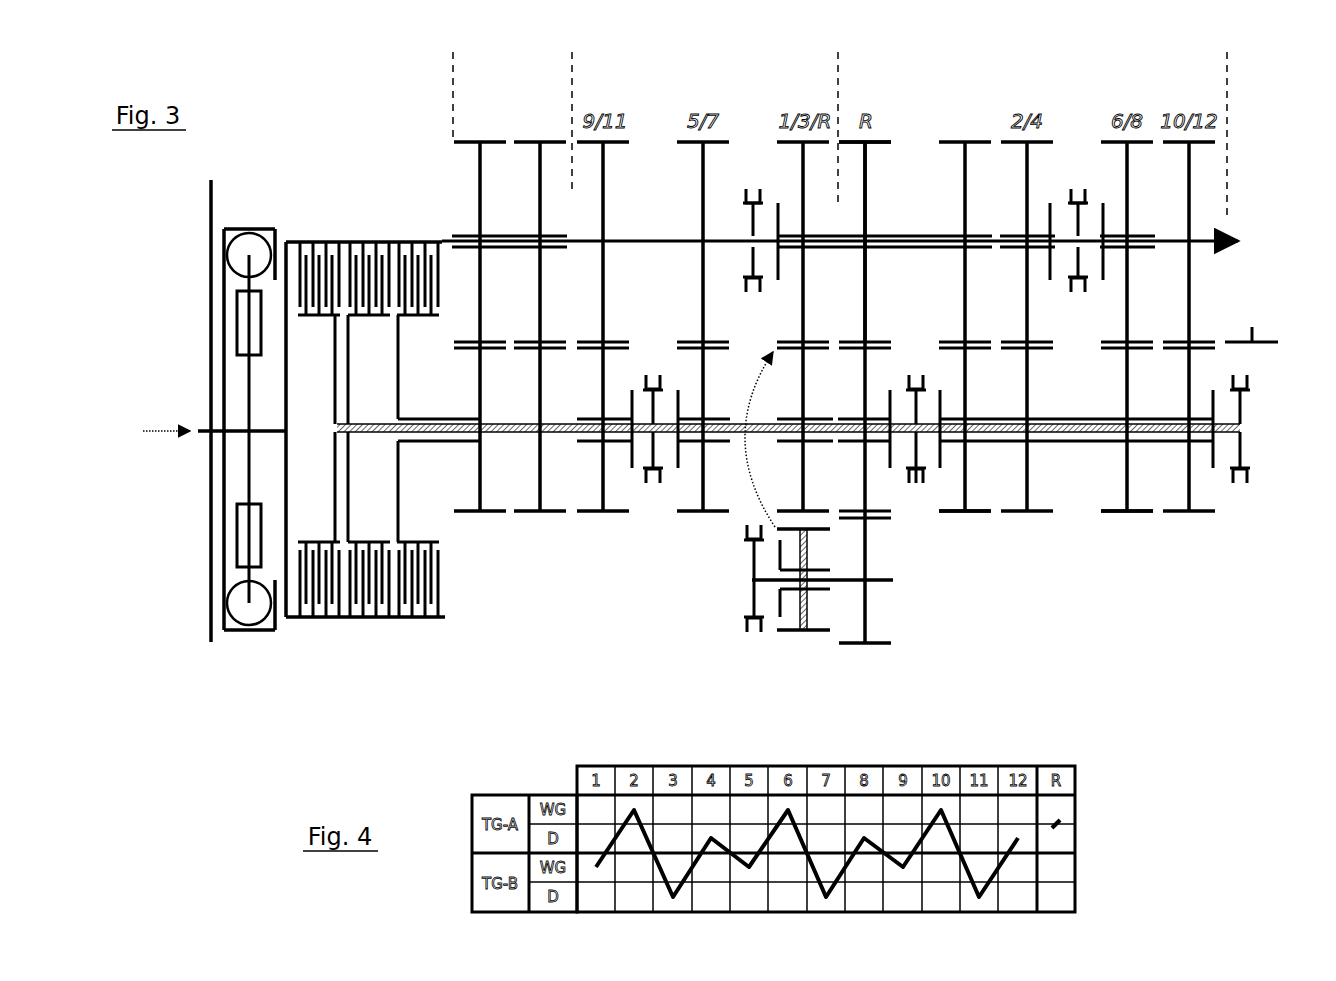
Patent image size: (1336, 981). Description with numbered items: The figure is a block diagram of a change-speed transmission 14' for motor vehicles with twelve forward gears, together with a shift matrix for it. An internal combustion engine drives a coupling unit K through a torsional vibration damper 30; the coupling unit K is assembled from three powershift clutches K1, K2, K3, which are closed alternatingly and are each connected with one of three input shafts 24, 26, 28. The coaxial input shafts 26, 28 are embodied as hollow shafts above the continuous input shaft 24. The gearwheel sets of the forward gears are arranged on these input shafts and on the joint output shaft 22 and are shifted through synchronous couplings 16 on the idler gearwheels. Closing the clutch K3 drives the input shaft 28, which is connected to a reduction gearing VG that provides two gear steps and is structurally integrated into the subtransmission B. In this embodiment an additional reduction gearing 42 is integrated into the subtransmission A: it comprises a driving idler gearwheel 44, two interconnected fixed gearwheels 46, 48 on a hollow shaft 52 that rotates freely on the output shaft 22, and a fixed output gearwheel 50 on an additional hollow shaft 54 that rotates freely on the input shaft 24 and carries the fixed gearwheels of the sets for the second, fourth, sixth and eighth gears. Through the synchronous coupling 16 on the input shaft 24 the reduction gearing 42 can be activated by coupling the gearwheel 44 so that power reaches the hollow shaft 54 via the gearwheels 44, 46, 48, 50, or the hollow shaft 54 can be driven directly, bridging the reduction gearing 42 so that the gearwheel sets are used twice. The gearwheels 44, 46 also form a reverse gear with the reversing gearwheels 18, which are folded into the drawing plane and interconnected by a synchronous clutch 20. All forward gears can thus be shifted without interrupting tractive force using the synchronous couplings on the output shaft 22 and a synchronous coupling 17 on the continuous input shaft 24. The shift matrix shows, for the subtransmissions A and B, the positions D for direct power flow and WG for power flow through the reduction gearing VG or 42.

The change-speed transmission 14' is at (1127, 587).
The synchronous coupling 16 is at (753, 185).
The synchronous coupling 17 is at (927, 490).
The reversing gearwheels 18 is at (818, 633).
The synchronous clutch 20 is at (745, 637).
The output shaft 22 is at (663, 238).
The continuous input shaft 24 is at (897, 425).
The input shaft 26 is at (400, 397).
The input shaft 28 is at (432, 443).
The torsional vibration damper 30 is at (208, 652).
The reduction gearing 42 is at (913, 167).
The driving idler gearwheel 44 is at (868, 492).
The fixed gearwheel 46 is at (867, 175).
The fixed gearwheel 48 is at (967, 175).
The fixed output gearwheel 50 is at (985, 513).
The hollow shaft 52 is at (920, 250).
The hollow shaft 54 is at (1088, 420).
The coupling unit K is at (365, 355).
The powershift clutch K1 is at (320, 237).
The powershift clutch K2 is at (362, 237).
The powershift clutch K3 is at (411, 381).
The reduction gearing VG is at (570, 62).
The subtransmission A is at (1225, 62).
The subtransmission B is at (574, 62).